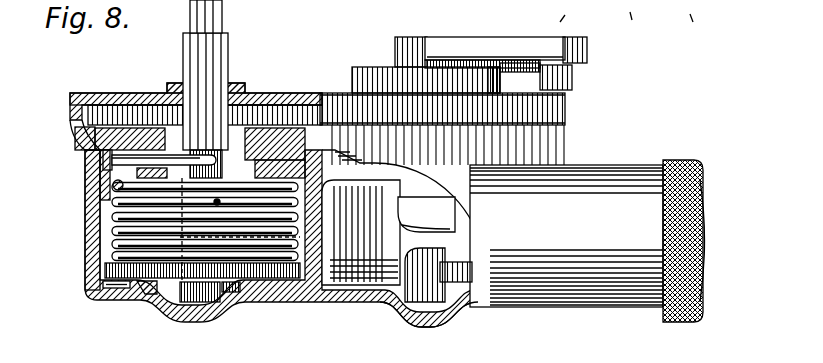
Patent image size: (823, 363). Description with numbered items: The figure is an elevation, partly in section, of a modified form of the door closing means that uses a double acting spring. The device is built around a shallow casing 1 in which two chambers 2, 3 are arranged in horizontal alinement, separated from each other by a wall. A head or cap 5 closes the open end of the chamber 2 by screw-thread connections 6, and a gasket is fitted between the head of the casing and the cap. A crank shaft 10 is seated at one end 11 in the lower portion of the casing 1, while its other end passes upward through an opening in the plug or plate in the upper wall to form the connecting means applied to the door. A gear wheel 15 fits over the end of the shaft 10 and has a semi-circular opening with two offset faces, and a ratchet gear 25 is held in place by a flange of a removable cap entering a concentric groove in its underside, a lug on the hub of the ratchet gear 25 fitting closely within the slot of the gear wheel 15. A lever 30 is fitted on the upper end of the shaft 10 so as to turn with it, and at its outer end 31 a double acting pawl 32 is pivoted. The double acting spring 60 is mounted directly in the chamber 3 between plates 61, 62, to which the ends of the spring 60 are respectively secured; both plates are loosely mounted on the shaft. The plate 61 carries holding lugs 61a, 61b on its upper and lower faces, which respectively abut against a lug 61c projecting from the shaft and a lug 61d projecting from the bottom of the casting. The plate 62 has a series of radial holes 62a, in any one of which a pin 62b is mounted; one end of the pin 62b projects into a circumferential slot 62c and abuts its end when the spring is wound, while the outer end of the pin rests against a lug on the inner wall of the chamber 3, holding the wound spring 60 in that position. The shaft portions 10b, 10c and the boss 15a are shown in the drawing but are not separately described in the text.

The casing 1 is at (318, 300).
The chamber 2 is at (370, 282).
The chamber 3 is at (90, 270).
The head or cap 5 is at (702, 205).
The screw-thread connections 6 is at (688, 11).
The crank shaft 10 is at (403, 0).
The slide member portion 10b is at (579, 11).
The slide member portion 10c is at (631, 10).
The end of crank shaft 11 is at (445, 318).
The gear wheel 15 is at (318, 93).
The shaft boss 15a is at (243, 88).
The ratchet gear 25 is at (394, 47).
The lever 30 is at (510, 48).
The outer end of lever 31 is at (588, 39).
The double acting pawl 32 is at (548, 84).
The double acting spring 60 is at (110, 220).
The plate 61 is at (285, 282).
The holding lug 61a is at (190, 304).
The holding lug 61b is at (142, 295).
The lug 61c is at (232, 296).
The lug 61d is at (118, 290).
The plate 62 is at (75, 137).
The radial holes 62a is at (138, 100).
The pin 62b is at (98, 178).
The circumferential slot 62c is at (200, 163).